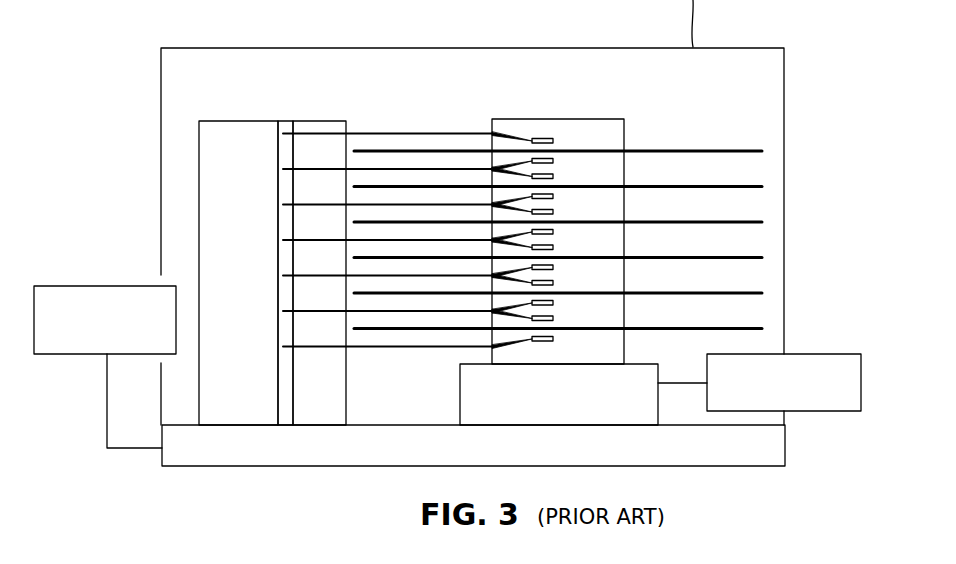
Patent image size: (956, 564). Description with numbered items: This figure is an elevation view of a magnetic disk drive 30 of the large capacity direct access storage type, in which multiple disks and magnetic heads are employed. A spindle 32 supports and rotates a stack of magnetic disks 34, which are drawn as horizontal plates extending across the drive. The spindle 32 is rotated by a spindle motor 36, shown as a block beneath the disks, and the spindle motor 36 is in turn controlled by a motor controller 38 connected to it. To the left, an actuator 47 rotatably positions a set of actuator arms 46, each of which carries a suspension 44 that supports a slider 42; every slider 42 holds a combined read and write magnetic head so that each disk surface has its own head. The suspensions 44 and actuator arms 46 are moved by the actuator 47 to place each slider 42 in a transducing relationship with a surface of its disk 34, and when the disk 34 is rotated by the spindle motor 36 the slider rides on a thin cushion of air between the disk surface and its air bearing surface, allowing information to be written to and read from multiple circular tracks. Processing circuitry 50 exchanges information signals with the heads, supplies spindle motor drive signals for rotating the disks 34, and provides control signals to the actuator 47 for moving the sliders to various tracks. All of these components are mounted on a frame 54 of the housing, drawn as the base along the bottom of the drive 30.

The magnetic disk drive 30 is at (676, 118).
The spindle 32 is at (612, 119).
The magnetic disk 34 is at (752, 153).
The spindle motor 36 is at (547, 406).
The motor controller 38 is at (820, 411).
The slider 42 is at (553, 160).
The suspension 44 is at (520, 170).
The actuator arm 46 is at (490, 168).
The actuator 47 is at (227, 120).
The processing circuitry 50 is at (76, 286).
The frame 54 is at (215, 466).